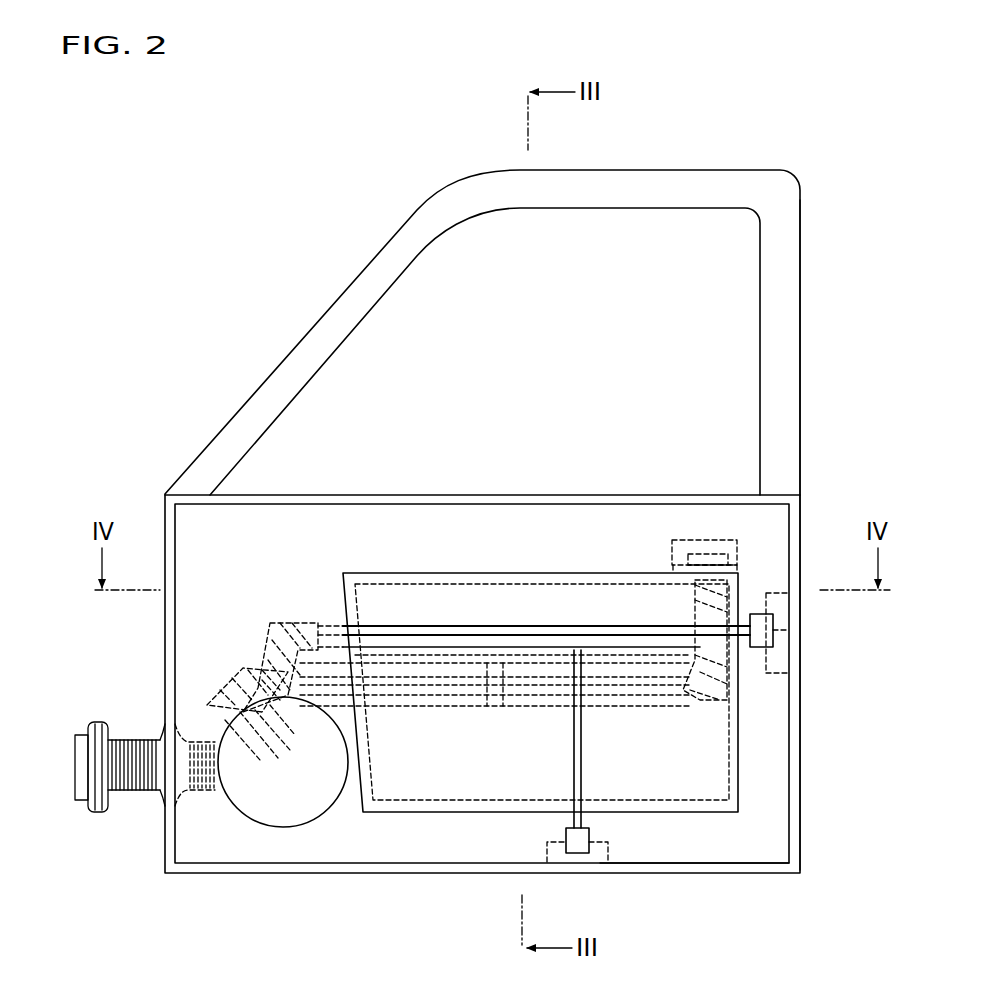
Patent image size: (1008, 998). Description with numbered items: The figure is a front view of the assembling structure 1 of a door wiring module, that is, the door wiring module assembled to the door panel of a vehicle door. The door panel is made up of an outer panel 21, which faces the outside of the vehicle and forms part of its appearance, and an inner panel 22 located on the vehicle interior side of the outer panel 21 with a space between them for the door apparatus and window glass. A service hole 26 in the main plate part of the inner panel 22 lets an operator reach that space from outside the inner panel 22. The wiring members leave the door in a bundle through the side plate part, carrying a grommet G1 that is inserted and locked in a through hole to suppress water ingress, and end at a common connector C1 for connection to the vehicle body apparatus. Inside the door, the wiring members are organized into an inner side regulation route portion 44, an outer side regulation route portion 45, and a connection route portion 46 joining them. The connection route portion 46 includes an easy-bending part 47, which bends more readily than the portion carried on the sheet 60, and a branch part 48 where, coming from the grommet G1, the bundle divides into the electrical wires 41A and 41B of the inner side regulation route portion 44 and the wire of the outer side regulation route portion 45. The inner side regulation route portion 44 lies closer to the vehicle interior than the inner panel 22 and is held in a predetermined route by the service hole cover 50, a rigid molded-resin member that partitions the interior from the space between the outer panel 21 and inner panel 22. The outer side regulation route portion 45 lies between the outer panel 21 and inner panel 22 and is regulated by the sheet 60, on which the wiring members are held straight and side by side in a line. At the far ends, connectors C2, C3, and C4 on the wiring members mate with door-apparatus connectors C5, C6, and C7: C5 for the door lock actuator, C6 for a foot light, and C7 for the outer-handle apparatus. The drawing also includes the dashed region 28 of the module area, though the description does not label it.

The assembling structure 1 is at (190, 308).
The outer panel 21 is at (800, 788).
The inner panel 22 is at (768, 818).
The service hole 26 is at (696, 793).
The service hole region 28 is at (731, 719).
The electrical wire 41A is at (620, 630).
The electrical wire 41B is at (574, 765).
The inner side regulation route portion 44 is at (530, 570).
The outer side regulation route portion 45 is at (437, 710).
The connection route portion 46 is at (274, 618).
The easy-bending part 47 is at (222, 688).
The branch part 48 is at (270, 740).
The service hole cover 50 is at (742, 740).
The sheet 60 is at (398, 708).
The connector C1 is at (75, 788).
The connector C2 is at (773, 632).
The connector C3 is at (578, 853).
The connector C4 is at (722, 540).
The connector C5 is at (766, 593).
The connector C6 is at (608, 847).
The connector C7 is at (682, 540).
The grommet G1 is at (162, 802).